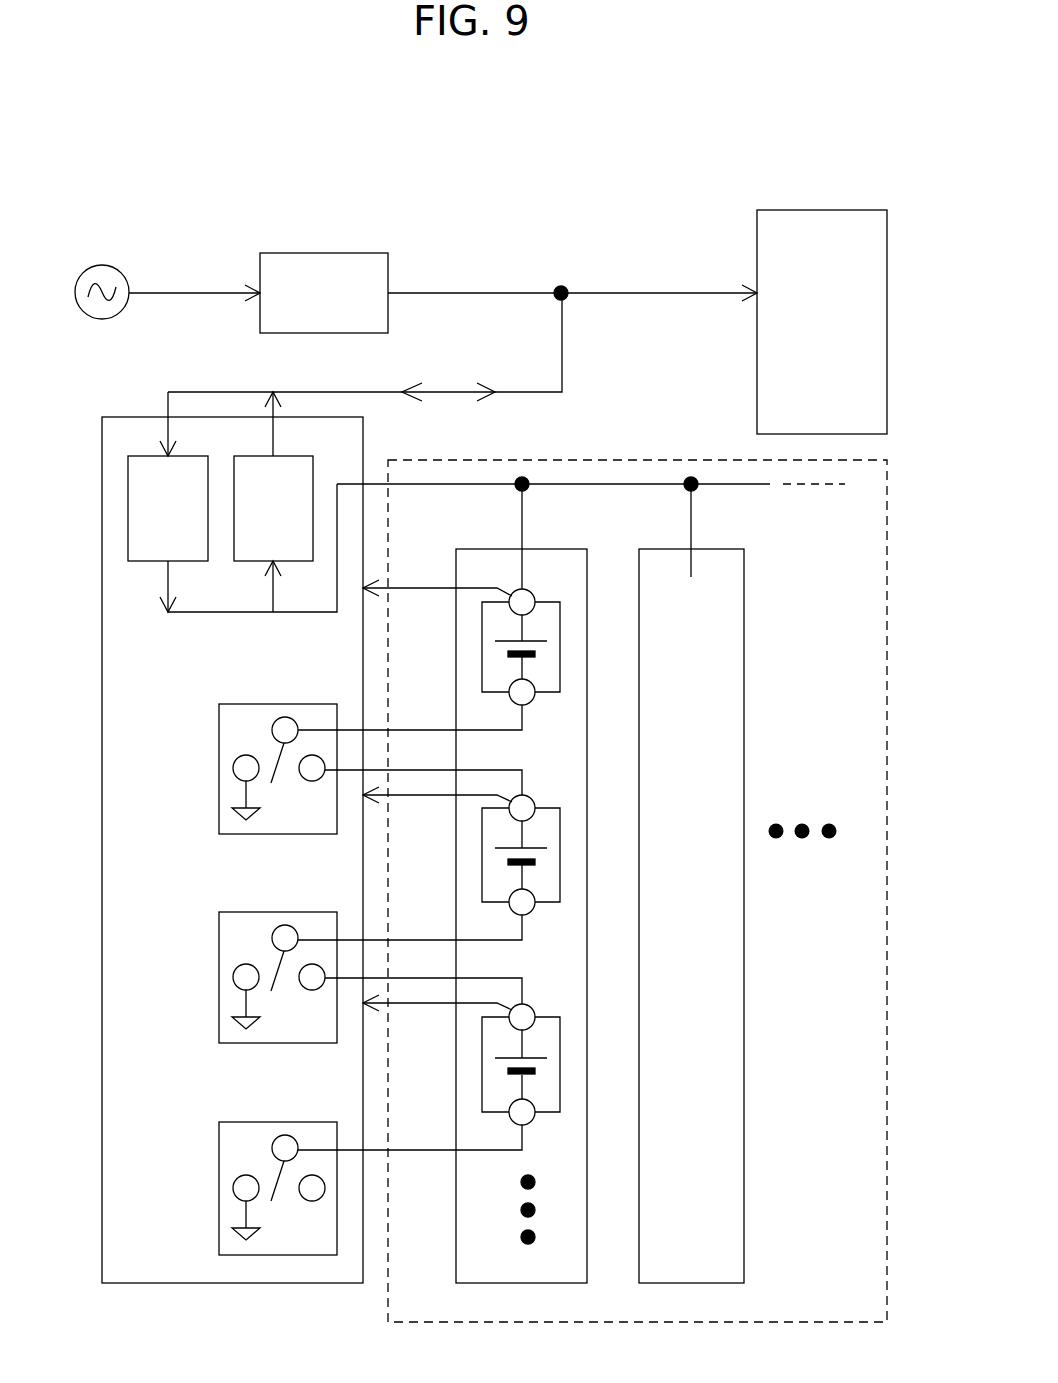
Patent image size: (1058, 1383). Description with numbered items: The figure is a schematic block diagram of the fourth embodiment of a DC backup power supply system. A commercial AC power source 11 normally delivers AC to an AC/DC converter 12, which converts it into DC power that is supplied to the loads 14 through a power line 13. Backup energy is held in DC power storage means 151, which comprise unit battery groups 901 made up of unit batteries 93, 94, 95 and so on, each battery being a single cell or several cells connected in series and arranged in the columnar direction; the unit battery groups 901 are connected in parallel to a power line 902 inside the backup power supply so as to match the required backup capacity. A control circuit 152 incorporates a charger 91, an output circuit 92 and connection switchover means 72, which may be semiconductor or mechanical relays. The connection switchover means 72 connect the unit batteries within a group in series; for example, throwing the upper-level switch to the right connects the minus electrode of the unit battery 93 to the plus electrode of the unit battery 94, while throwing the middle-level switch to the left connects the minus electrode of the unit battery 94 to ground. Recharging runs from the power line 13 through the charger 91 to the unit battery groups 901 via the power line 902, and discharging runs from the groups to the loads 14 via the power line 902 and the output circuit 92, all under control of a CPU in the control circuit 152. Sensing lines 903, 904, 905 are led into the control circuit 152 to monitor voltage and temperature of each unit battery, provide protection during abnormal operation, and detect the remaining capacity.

The commercial AC power source 11 is at (103, 265).
The AC/DC converter 12 is at (327, 253).
The power line 13 is at (605, 293).
The loads 14 is at (812, 210).
The DC power storage means 151 is at (612, 460).
The control circuit 152 is at (115, 417).
The charger 91 is at (132, 563).
The output circuit 92 is at (243, 563).
The connection switchover means 72 is at (260, 704).
The unit battery 93 is at (560, 667).
The unit battery 94 is at (560, 875).
The unit battery 95 is at (560, 1085).
The unit battery group 901 is at (455, 1257).
The power line 902 is at (653, 488).
The sensing line 903 is at (422, 590).
The sensing line 904 is at (425, 798).
The sensing line 905 is at (423, 1006).